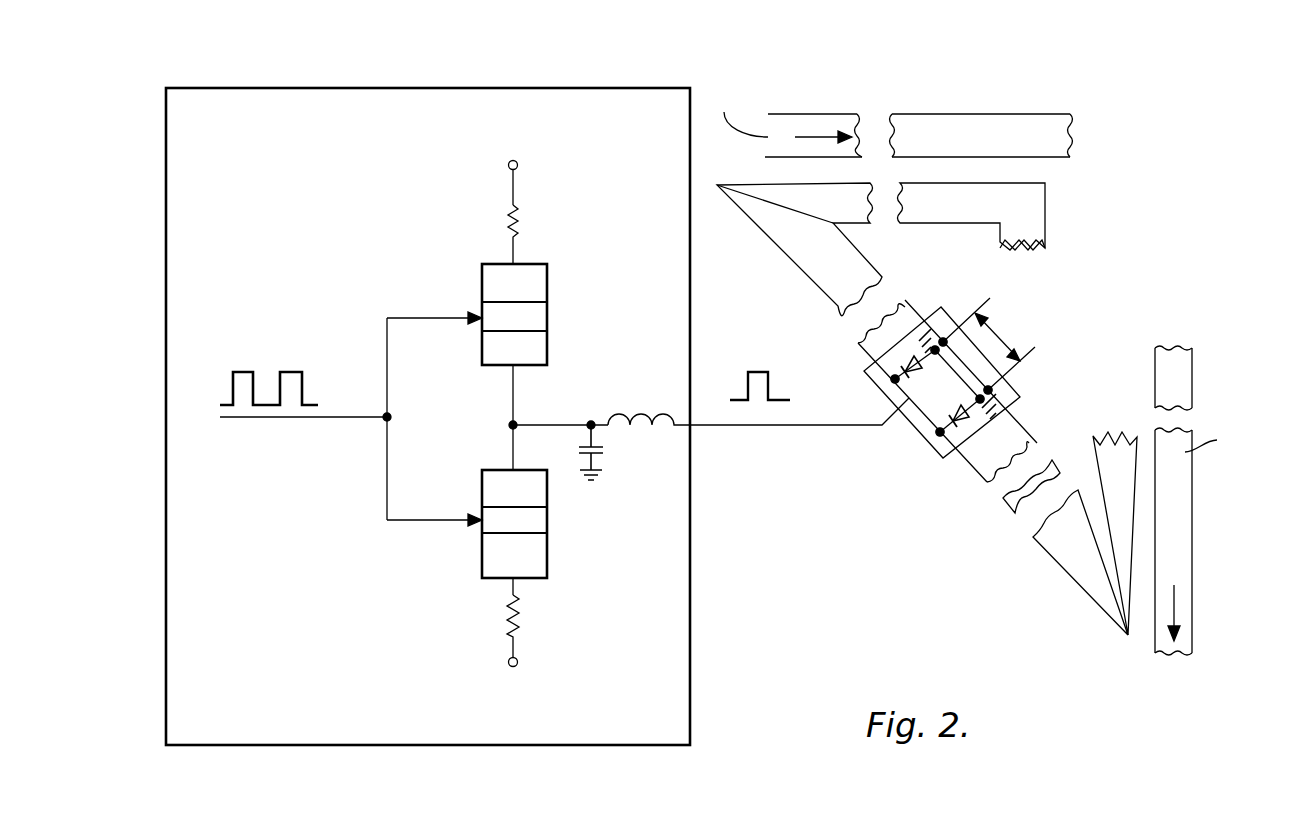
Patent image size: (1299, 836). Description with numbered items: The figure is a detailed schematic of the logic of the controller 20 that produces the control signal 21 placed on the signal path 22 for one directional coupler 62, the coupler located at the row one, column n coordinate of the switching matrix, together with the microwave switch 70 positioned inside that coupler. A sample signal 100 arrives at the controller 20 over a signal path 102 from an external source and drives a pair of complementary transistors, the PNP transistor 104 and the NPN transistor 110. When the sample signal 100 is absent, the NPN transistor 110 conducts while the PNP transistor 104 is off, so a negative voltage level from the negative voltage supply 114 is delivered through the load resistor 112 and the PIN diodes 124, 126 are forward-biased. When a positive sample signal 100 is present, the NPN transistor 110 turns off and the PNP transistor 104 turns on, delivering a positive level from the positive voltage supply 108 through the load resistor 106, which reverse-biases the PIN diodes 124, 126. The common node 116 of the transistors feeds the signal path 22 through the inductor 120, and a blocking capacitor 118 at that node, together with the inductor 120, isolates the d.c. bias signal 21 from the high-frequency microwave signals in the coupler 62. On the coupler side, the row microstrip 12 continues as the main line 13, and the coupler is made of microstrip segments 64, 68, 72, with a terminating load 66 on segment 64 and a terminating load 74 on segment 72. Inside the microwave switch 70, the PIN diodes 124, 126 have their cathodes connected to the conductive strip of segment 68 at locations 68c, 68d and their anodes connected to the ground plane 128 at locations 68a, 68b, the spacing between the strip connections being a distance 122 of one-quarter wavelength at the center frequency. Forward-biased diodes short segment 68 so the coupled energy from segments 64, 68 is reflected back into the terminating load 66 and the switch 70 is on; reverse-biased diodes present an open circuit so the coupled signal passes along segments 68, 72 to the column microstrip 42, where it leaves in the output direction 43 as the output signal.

The controller 20 is at (605, 88).
The sample signal 100 is at (288, 371).
The signal path 102 is at (285, 420).
The PNP transistor 104 is at (540, 264).
The load resistor 106 is at (521, 216).
The positive voltage supply 108 is at (518, 161).
The NPN transistor 110 is at (490, 470).
The load resistor 112 is at (519, 614).
The negative voltage supply 114 is at (518, 666).
The output node 116 is at (548, 424).
The blocking capacitor 118 is at (605, 450).
The inductor 120 is at (655, 414).
The signal path 22 is at (748, 427).
The control signal 21 is at (751, 366).
The directional coupler 62 is at (1016, 85).
The row microstrip 12 is at (787, 120).
The main waveguide 13 is at (823, 137).
The microstrip segment 68 is at (803, 258).
The microstrip segment 64 is at (955, 208).
The terminating load 66 is at (1030, 252).
The microwave switch 70 is at (914, 430).
The distance 122 is at (1008, 342).
The PIN diode 124 is at (895, 370).
The PIN diode 126 is at (968, 428).
The ground plane 128 is at (935, 347).
The location 68a is at (946, 339).
The location 68b is at (991, 391).
The location 68c is at (892, 381).
The location 68d is at (937, 437).
The microstrip segment 72 is at (1100, 468).
The terminating load 74 is at (1100, 435).
The column microstrip 42 is at (1173, 357).
The output signal direction 43 is at (1178, 612).